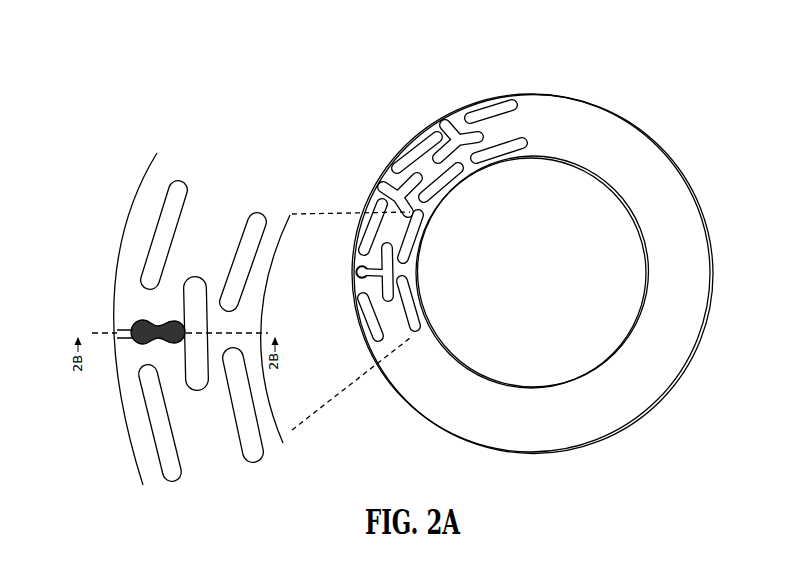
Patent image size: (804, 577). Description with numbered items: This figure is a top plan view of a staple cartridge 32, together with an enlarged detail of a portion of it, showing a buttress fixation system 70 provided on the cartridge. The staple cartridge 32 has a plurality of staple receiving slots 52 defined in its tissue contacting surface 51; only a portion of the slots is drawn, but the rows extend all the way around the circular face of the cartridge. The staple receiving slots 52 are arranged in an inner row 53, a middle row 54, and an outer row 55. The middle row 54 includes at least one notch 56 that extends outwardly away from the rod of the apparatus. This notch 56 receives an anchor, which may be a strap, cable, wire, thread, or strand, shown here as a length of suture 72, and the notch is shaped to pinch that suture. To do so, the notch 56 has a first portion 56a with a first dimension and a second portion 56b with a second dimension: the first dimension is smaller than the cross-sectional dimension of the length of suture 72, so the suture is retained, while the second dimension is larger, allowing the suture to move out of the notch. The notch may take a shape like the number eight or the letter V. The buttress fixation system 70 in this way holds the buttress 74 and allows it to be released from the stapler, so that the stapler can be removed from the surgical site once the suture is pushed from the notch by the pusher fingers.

The staple cartridge 32 is at (527, 74).
The tissue contacting surface 51 is at (572, 108).
The staple receiving slots 52 is at (485, 103).
The inner row 53 is at (438, 182).
The middle row 54 is at (406, 203).
The outer row 55 is at (419, 156).
The notch 56 is at (358, 267).
The first portion 56a is at (160, 322).
The second portion 56b is at (137, 322).
The buttress fixation system 70 is at (126, 448).
The length of suture 72 is at (147, 340).
The buttress 74 is at (188, 486).